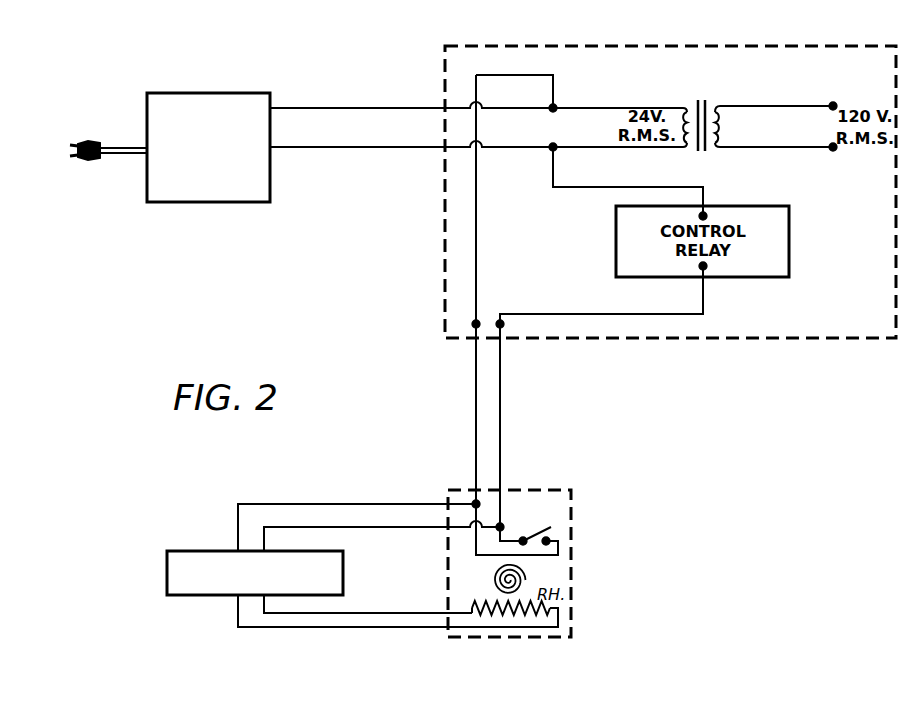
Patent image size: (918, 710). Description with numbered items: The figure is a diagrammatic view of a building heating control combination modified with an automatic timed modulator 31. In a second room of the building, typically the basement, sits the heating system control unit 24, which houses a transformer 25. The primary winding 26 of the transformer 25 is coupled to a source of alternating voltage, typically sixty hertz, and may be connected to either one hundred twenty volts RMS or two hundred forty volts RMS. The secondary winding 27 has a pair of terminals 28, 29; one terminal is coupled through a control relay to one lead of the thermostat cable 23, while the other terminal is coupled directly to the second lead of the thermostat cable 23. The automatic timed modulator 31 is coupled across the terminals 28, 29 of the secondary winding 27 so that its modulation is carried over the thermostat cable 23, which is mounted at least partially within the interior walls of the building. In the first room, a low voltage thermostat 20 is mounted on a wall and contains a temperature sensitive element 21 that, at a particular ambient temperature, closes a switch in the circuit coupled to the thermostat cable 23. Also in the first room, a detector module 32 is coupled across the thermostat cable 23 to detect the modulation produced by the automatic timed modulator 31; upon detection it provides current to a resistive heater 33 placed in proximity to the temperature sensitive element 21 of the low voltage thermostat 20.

The low voltage thermostat 20 is at (571, 512).
The temperature sensitive element 21 is at (495, 577).
The thermostat cable 23 is at (478, 434).
The heating system control unit 24 is at (445, 245).
The transformer 25 is at (703, 99).
The primary winding 26 is at (716, 103).
The secondary winding 27 is at (686, 103).
The terminal 28 is at (556, 106).
The terminal 29 is at (550, 150).
The automatic timed modulator 31 is at (212, 93).
The detector module 32 is at (196, 550).
The resistive heater 33 is at (493, 604).